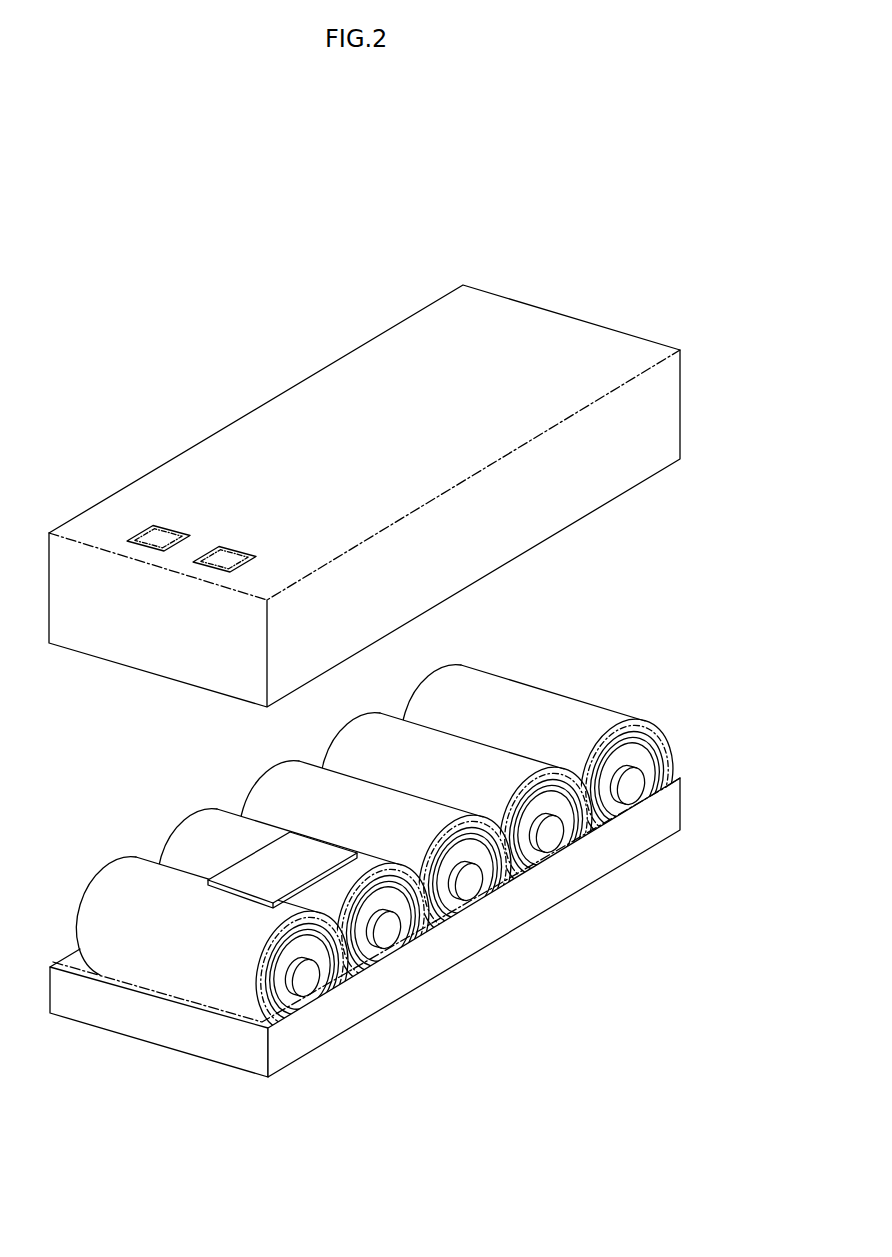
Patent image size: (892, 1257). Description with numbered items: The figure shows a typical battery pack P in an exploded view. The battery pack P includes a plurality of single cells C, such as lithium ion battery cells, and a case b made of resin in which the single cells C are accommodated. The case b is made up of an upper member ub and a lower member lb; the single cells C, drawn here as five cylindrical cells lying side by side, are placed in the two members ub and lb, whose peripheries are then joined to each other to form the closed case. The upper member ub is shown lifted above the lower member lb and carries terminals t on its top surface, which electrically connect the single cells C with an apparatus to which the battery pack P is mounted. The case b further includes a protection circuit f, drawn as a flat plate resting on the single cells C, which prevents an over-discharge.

The battery pack P is at (128, 304).
The case b is at (773, 527).
The upper member ub is at (618, 463).
The lower member lb is at (665, 817).
The terminals t is at (224, 560).
The single cells C is at (306, 978).
The protection circuit f is at (302, 860).